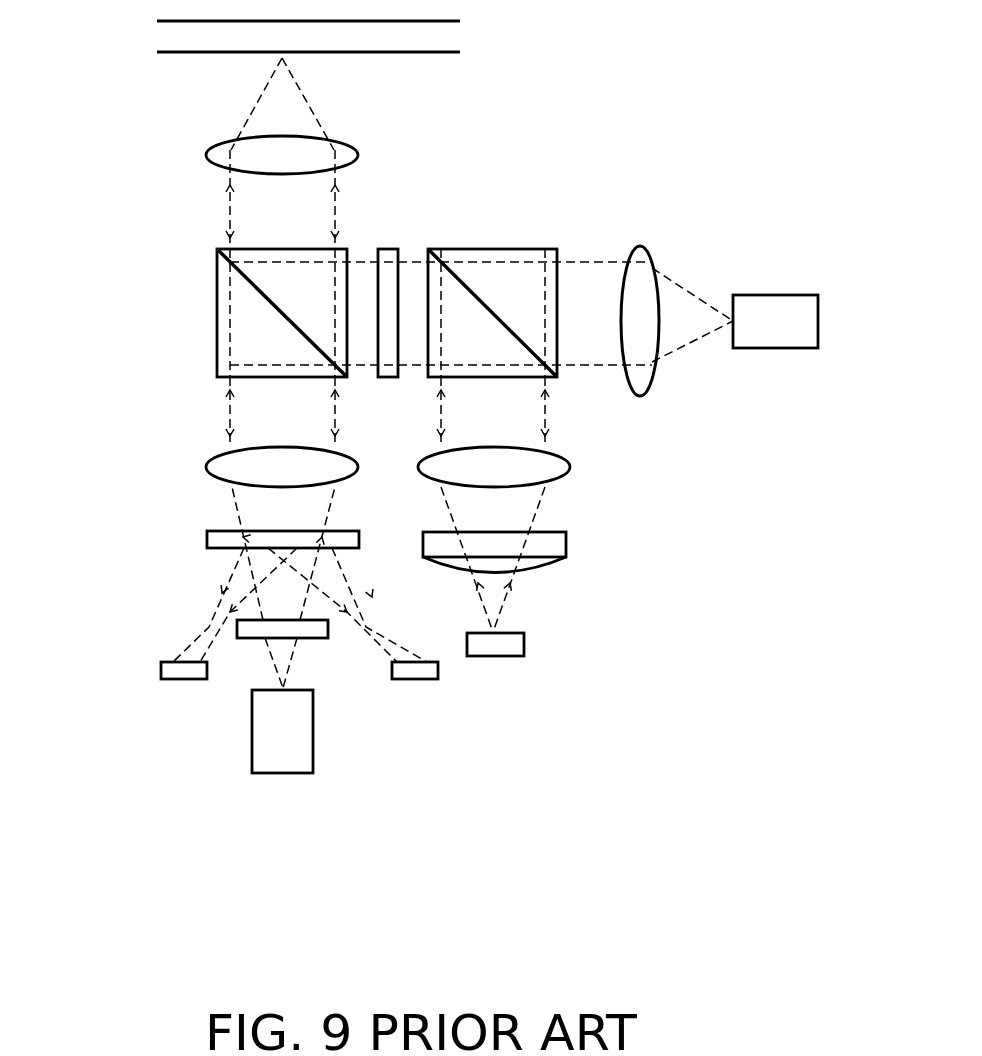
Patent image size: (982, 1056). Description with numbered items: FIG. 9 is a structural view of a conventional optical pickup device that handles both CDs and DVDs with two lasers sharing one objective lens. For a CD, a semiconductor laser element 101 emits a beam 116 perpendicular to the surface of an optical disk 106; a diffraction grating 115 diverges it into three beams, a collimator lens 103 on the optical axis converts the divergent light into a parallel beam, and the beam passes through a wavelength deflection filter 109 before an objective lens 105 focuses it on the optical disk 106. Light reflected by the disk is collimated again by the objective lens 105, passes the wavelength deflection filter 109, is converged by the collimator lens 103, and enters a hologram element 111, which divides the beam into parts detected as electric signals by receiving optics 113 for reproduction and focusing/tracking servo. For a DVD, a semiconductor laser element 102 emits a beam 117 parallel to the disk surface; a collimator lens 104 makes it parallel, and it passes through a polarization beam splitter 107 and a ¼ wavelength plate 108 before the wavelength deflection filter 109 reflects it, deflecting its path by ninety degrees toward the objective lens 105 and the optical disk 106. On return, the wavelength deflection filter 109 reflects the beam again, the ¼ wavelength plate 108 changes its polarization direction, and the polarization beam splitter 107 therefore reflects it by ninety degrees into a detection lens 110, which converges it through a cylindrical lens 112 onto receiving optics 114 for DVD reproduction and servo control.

The semiconductor laser element 101 is at (290, 773).
The semiconductor laser element 102 is at (770, 294).
The collimator lens 103 is at (207, 462).
The collimator lens 104 is at (645, 246).
The objective lens 105 is at (207, 153).
The optical disk 106 is at (452, 42).
The polarization beam splitter 107 is at (482, 247).
The ¼ wavelength plate 108 is at (387, 247).
The wavelength deflection filter 109 is at (228, 298).
The detection lens 110 is at (570, 467).
The hologram element 111 is at (207, 538).
The cylindrical lens 112 is at (566, 545).
The receiving optics 113 is at (180, 679).
The receiving optics 114 is at (524, 645).
The diffraction grating 115 is at (320, 638).
The beam 116 is at (223, 407).
The beam 117 is at (572, 262).